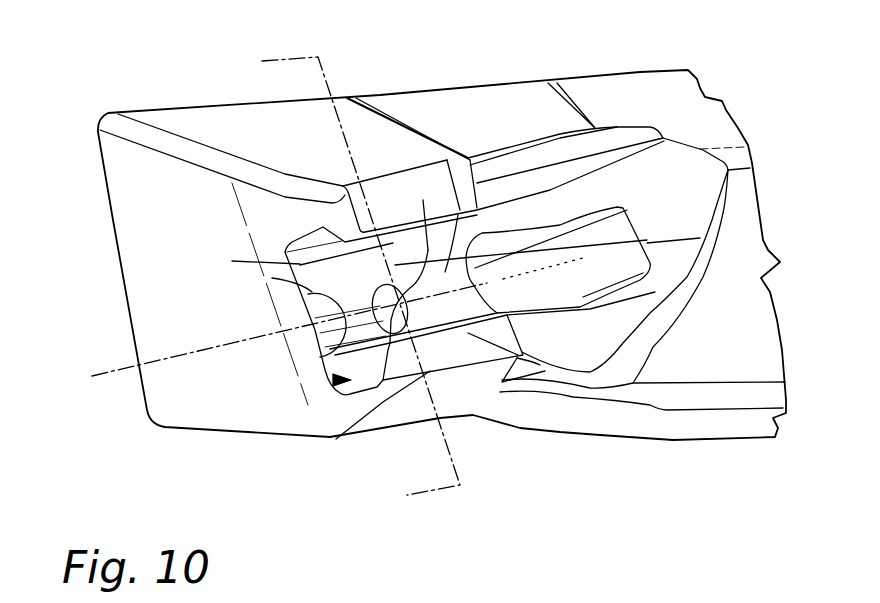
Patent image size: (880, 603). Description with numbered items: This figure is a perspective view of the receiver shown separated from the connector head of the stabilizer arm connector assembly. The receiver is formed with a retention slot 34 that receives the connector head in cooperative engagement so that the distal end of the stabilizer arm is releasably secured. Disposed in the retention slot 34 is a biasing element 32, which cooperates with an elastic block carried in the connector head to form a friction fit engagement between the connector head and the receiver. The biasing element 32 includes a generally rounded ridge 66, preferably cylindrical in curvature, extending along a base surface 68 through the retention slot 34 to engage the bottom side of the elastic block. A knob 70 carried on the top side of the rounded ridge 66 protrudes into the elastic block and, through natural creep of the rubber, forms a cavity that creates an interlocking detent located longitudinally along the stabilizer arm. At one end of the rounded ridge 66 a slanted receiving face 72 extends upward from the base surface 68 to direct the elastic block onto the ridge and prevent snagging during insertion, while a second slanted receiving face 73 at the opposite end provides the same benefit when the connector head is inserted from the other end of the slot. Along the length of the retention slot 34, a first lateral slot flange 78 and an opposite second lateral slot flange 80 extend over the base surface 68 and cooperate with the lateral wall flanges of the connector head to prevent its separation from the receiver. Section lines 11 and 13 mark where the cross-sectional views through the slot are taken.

The section line 11- 11 is at (316, 328).
The section line 13- 13 is at (332, 282).
The biasing element 32 is at (440, 273).
The retention slot 34 is at (333, 380).
The rounded ridge 66 is at (272, 278).
The base surface 68 is at (232, 261).
The knob 70 is at (423, 200).
The slanted receiving face 72 is at (318, 350).
The second slanted receiving face 73 is at (650, 243).
The first lateral slot flange 78 is at (458, 215).
The second lateral slot flange 80 is at (520, 356).